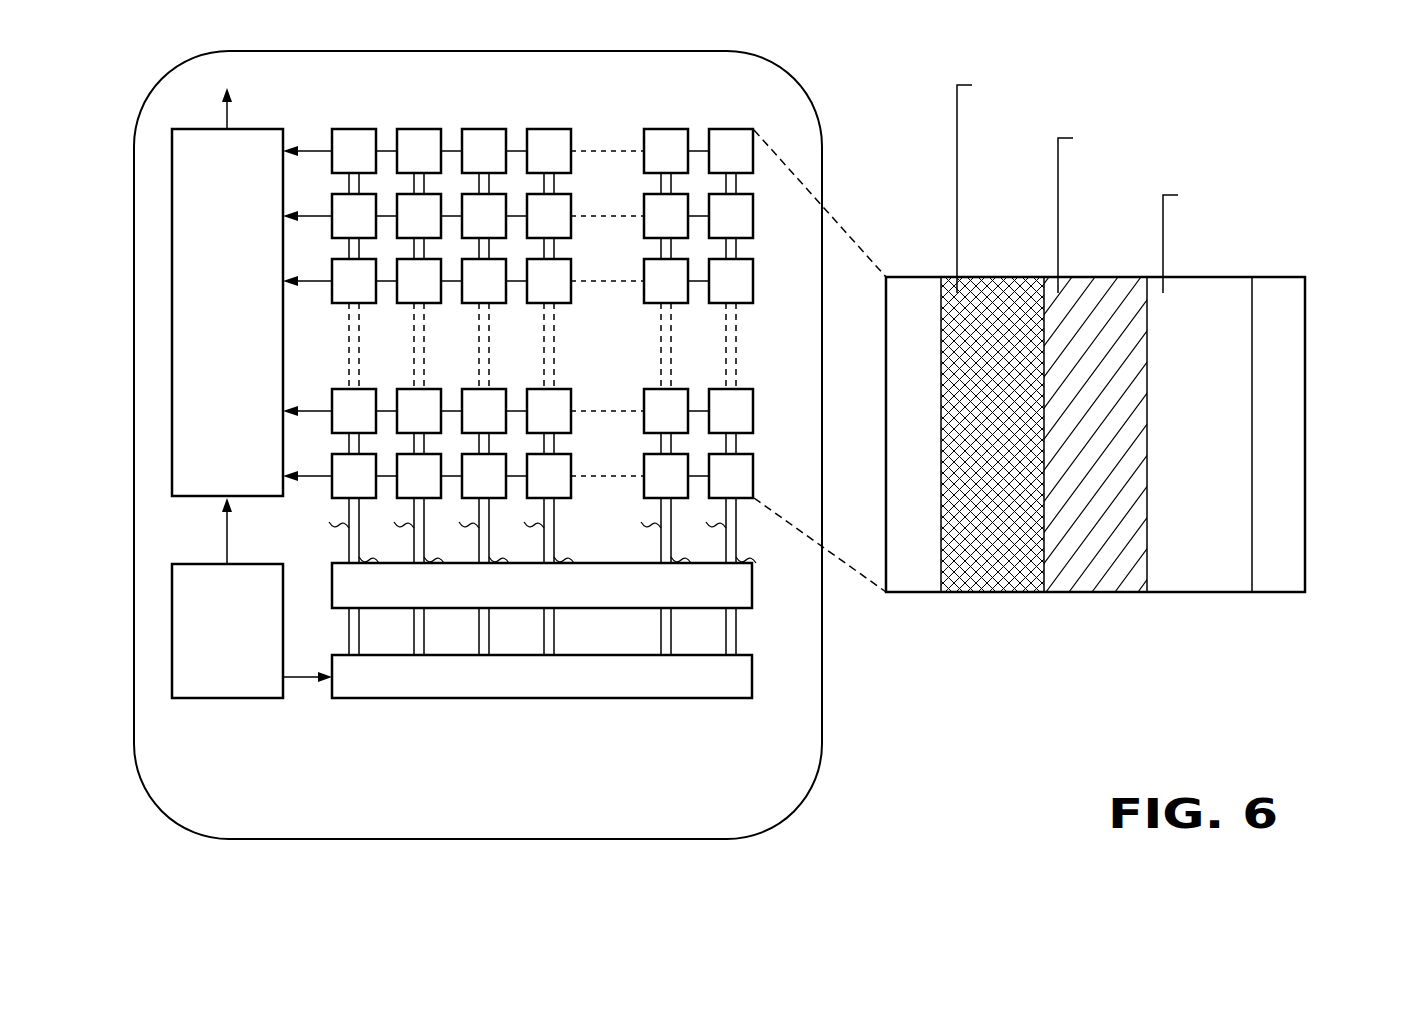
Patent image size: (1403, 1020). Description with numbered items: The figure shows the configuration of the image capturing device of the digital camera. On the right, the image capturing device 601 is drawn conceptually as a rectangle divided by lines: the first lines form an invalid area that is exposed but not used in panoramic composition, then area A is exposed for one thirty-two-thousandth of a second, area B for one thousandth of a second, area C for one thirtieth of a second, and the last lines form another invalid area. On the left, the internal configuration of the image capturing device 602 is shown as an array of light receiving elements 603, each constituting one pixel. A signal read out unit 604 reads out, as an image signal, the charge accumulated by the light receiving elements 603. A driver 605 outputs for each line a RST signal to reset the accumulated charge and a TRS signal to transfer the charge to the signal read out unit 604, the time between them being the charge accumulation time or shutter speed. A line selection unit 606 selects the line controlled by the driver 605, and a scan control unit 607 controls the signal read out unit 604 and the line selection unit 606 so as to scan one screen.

The image capturing device 601 is at (1306, 298).
The internal configuration of the image capturing device 602 is at (797, 84).
The light receiving element 603 is at (365, 127).
The signal read out unit 604 is at (281, 128).
The driver 605 is at (753, 592).
The line selection unit 606 is at (345, 700).
The scan control unit 607 is at (252, 700).